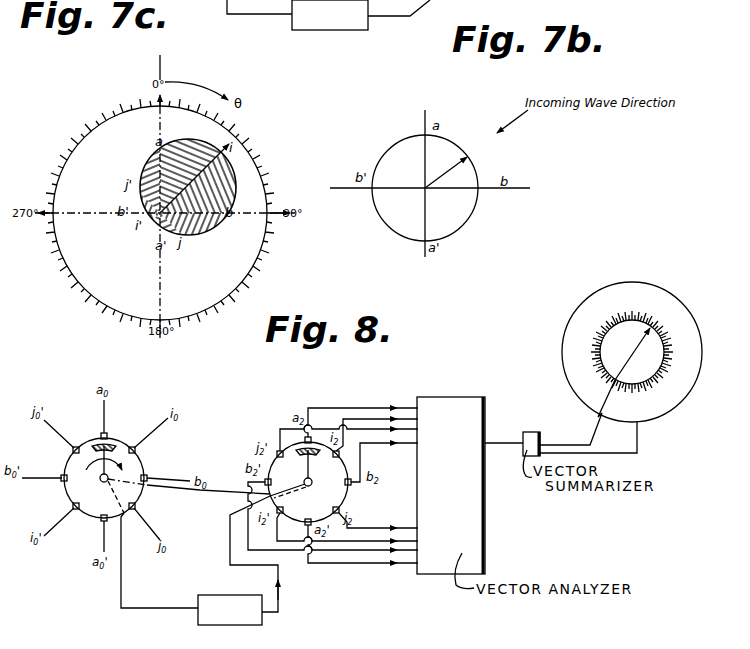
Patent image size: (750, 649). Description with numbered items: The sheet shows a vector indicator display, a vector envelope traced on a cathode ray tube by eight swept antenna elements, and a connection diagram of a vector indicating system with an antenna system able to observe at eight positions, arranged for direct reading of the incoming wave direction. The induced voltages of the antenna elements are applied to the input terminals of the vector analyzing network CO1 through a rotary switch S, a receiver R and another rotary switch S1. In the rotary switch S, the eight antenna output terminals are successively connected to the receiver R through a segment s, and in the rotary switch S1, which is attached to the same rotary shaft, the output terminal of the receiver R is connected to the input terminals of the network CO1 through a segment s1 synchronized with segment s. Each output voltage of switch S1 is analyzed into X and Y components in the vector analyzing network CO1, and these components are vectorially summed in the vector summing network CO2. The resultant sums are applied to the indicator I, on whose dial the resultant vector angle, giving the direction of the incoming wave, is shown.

In FIG. 7B, the receiver R is at (330, 15).
In FIG. 8, the receiver R is at (230, 610).
In FIG. 8, the rotary switch S is at (106, 476).
In FIG. 8, the rotary switch S1 is at (308, 481).
In FIG. 8, the segment s is at (118, 443).
In FIG. 8, the segment s1 is at (320, 452).
In FIG. 8, the vector analyzing network CO1 is at (451, 475).
In FIG. 8, the vector summing network CO2 is at (534, 435).
In FIG. 8, the indicator I is at (632, 349).